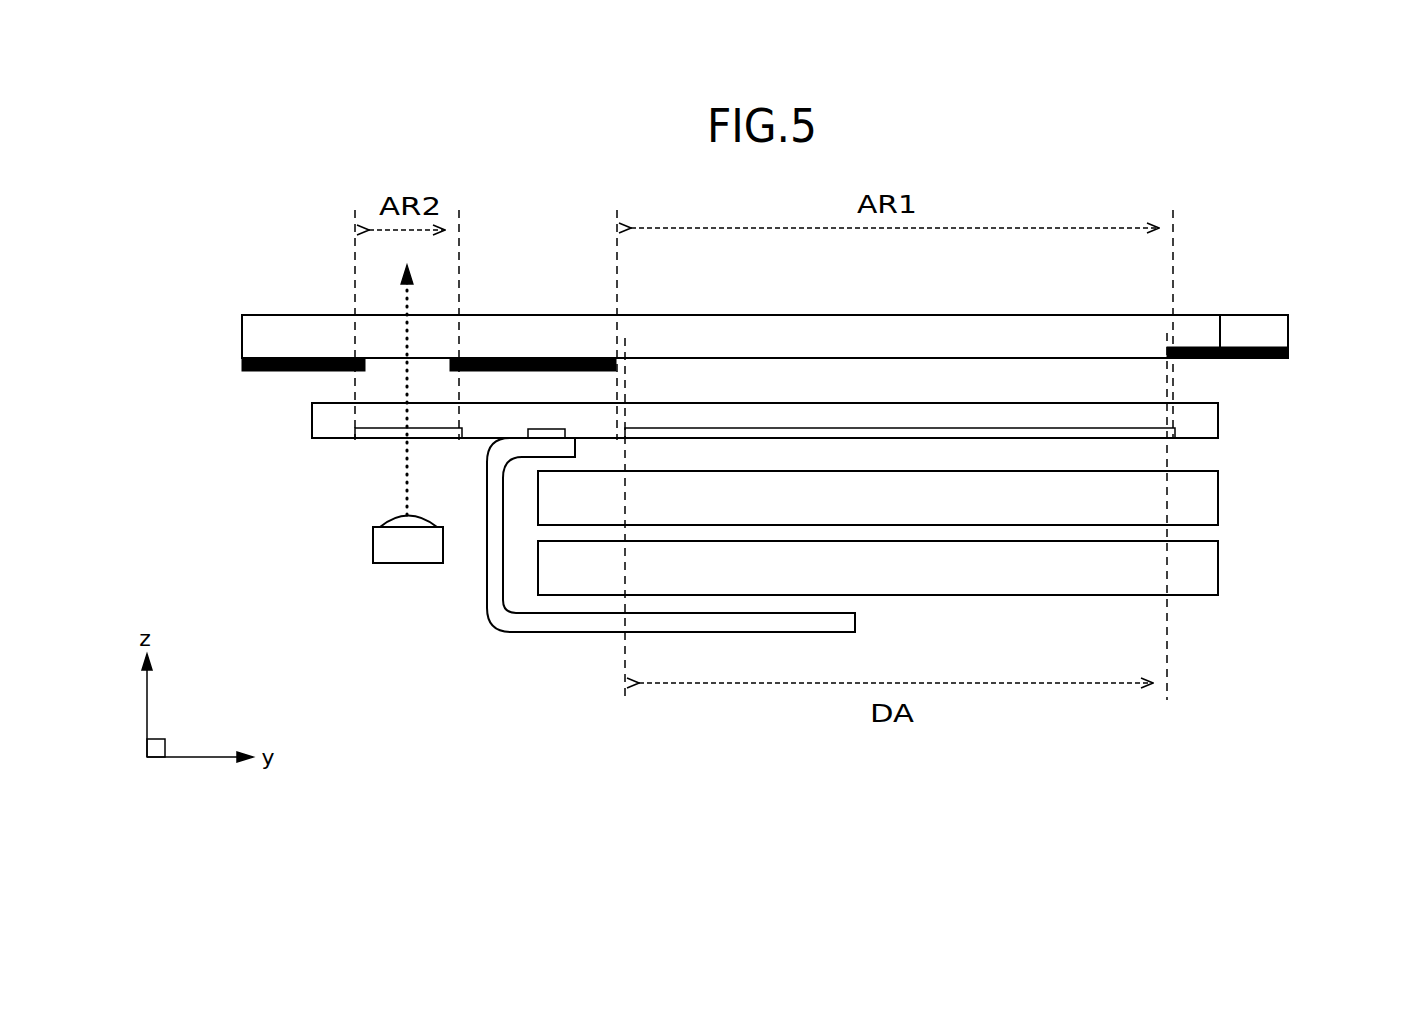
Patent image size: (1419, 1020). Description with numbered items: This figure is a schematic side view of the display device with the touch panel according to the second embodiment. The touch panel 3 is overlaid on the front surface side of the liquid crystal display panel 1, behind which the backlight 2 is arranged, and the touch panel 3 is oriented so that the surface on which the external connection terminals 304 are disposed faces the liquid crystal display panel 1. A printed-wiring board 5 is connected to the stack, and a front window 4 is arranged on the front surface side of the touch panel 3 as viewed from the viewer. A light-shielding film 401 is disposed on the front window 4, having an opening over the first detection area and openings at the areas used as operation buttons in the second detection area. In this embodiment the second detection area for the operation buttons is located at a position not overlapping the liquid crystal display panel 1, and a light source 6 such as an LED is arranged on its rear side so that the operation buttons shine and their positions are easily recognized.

The liquid crystal display panel 1 is at (1223, 498).
The backlight 2 is at (1223, 568).
The touch panel 3 is at (1223, 417).
The front window 4 is at (1292, 328).
The printed-wiring board 5 is at (500, 578).
The light source 6 is at (400, 545).
The external connection terminal 304 is at (546, 429).
The light-shielding film 401 is at (240, 365).